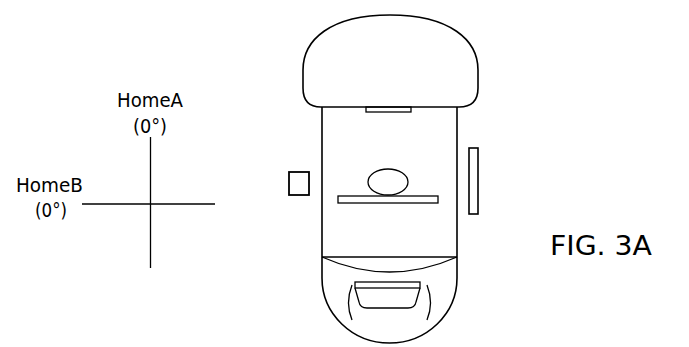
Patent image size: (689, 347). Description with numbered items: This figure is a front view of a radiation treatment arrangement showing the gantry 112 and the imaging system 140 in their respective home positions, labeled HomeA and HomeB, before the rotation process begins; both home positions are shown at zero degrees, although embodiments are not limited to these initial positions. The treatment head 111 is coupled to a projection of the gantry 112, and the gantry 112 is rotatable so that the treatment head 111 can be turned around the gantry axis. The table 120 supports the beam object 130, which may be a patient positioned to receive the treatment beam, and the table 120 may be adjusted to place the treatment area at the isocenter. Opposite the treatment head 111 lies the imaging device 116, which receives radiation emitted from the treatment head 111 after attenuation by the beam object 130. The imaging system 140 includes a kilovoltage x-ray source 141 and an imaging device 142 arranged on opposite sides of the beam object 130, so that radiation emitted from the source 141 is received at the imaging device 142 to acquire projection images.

The treatment head 111 is at (387, 113).
The gantry 112 is at (460, 233).
The imaging device 116 is at (403, 281).
The table 120 is at (358, 204).
The beam object 130 is at (387, 168).
The imaging system 140 is at (508, 178).
The kilovoltage x-ray source 141 is at (298, 171).
The imaging device 142 is at (478, 152).